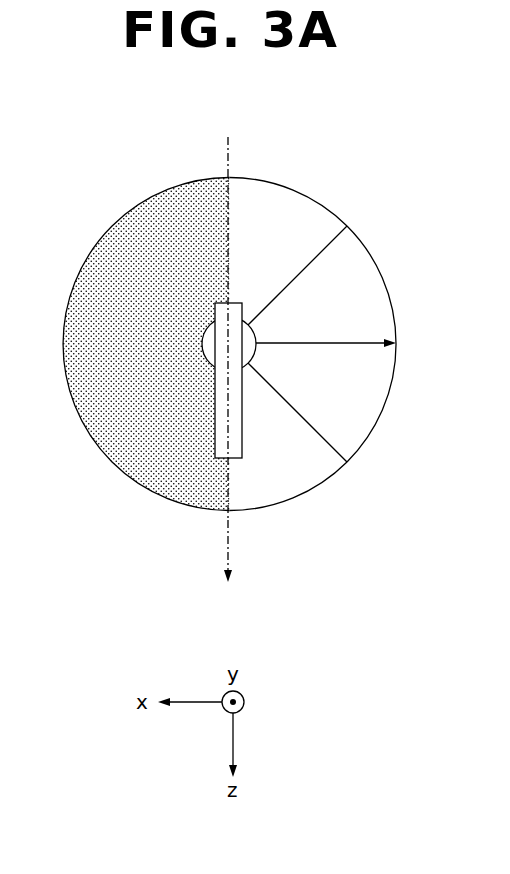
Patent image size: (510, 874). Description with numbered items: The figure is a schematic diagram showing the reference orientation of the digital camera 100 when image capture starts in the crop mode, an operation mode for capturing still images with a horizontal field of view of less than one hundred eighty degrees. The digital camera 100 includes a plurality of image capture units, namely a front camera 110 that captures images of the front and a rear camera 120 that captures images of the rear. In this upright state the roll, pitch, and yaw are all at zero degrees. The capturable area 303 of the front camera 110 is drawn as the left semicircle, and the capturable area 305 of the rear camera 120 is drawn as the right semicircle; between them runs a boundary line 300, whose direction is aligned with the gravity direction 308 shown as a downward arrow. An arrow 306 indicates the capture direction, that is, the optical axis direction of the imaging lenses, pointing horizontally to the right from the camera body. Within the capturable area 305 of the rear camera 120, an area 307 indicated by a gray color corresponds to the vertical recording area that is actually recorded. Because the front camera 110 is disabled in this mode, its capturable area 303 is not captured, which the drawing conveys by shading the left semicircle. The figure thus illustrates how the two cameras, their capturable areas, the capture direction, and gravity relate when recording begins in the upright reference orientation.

The digital camera 100 is at (243, 443).
The front camera 110 is at (204, 334).
The rear camera 120 is at (255, 352).
The boundary line 300 is at (228, 165).
The capturable area of the front camera 303 is at (147, 200).
The capturable area of the rear camera 305 is at (310, 197).
The arrow indicating capture direction 306 is at (316, 341).
The vertical recording area 307 is at (372, 254).
The gravity direction 308 is at (229, 540).